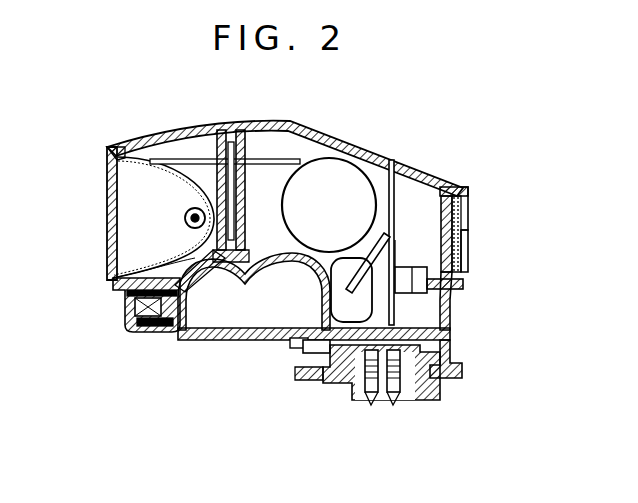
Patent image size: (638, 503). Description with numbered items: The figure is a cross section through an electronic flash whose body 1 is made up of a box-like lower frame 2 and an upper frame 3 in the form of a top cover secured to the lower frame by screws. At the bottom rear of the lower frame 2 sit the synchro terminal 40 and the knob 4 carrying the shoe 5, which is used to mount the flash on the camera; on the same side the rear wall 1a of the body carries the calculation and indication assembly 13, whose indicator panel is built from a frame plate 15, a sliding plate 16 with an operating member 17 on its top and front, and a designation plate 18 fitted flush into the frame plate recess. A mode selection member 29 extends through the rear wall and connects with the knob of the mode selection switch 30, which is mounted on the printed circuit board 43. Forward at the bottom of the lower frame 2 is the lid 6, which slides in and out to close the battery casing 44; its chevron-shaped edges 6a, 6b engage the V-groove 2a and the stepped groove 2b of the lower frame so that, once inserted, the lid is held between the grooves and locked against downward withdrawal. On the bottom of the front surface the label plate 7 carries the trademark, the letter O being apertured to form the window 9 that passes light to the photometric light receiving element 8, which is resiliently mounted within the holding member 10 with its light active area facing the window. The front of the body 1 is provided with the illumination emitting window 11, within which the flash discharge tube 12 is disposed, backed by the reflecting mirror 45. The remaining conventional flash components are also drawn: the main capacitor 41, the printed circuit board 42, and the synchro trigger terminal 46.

The body 1 is at (399, 117).
The rear wall 1a is at (441, 208).
The lower frame 2 is at (448, 317).
The V-groove 2a is at (160, 330).
The stepped groove 2b is at (318, 320).
The upper frame 3 is at (330, 124).
The knob 4 is at (463, 371).
The shoe 5 is at (430, 384).
The lid 6 is at (240, 329).
The chevron-shaped edge 6a is at (186, 322).
The chevron-shaped edge 6b is at (290, 345).
The label plate 7 is at (138, 322).
The light receiving element 8 is at (151, 326).
The window 9 is at (134, 308).
The holding member 10 is at (160, 274).
The illumination emitting window 11 is at (106, 206).
The flash discharge tube 12 is at (190, 211).
The calculation and indication assembly 13 is at (471, 190).
The frame plate 15 is at (441, 222).
The sliding plate 16 is at (466, 256).
The operating member 17 is at (469, 204).
The designation plate 18 is at (468, 232).
The mode selection member 29 is at (463, 286).
The mode selection switch 30 is at (420, 276).
The synchro terminal 40 is at (306, 354).
The main capacitor 41 is at (346, 170).
The printed circuit board 42 is at (244, 164).
The printed circuit board 43 is at (398, 160).
The battery casing 44 is at (197, 259).
The reflecting mirror 45 is at (140, 262).
The synchro trigger terminal 46 is at (396, 402).